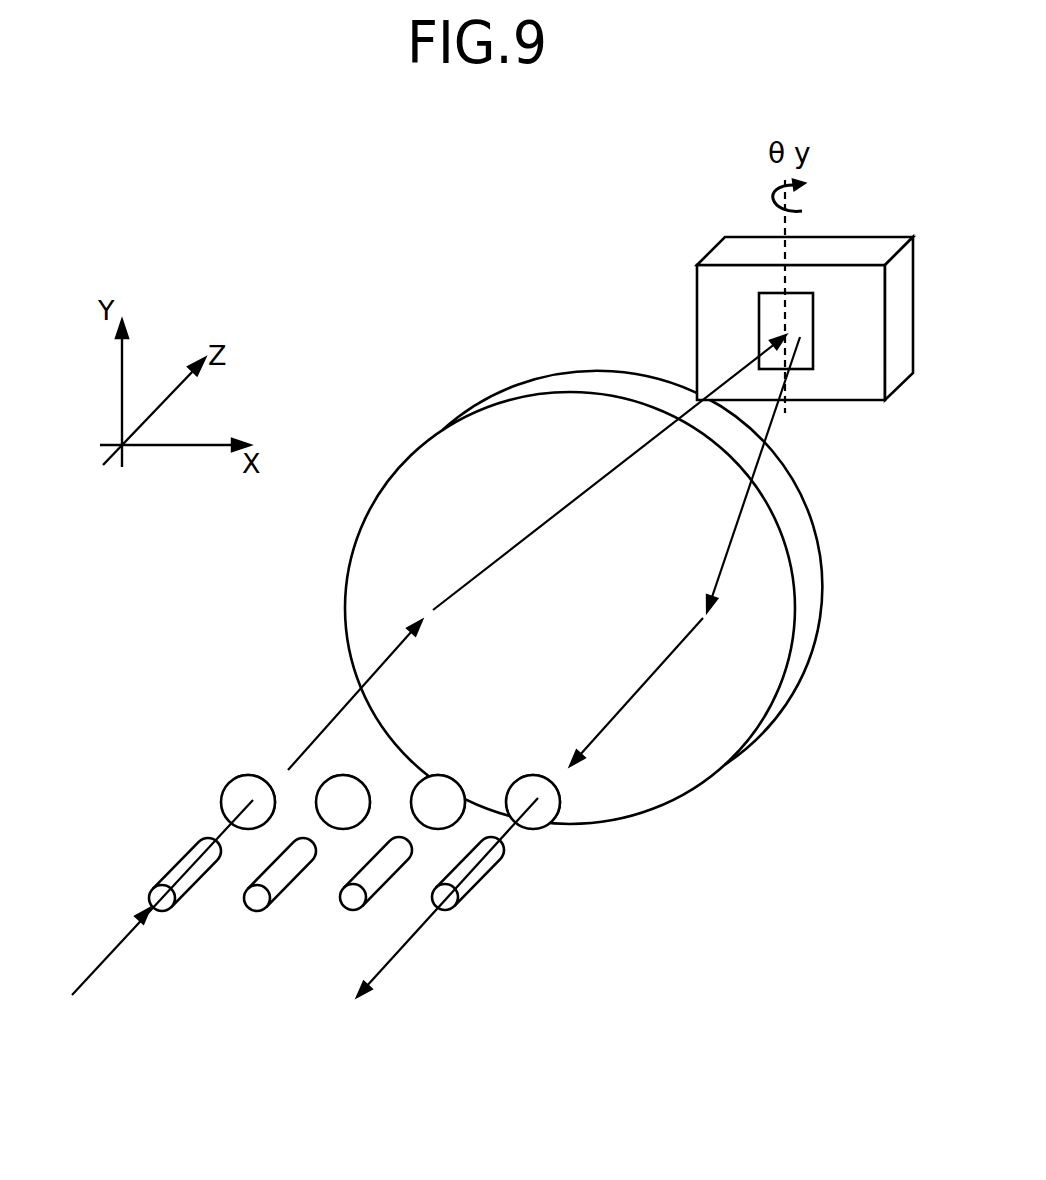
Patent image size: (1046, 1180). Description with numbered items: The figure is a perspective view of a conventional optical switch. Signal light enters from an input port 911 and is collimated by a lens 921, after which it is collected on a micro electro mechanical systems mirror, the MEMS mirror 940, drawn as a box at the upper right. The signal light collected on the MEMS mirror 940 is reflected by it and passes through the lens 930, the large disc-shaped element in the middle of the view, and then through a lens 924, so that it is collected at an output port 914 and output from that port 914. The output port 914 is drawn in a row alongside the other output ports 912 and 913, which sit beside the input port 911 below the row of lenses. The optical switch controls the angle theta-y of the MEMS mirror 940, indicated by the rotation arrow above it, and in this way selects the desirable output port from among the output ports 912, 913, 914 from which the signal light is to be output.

The input port 911 is at (165, 877).
The output port 912 is at (244, 903).
The output port 913 is at (343, 907).
The output port 914 is at (478, 883).
The lens 921 is at (227, 788).
The lens 924 is at (557, 822).
The lens 930 is at (445, 430).
The MEMS mirror 940 is at (757, 310).